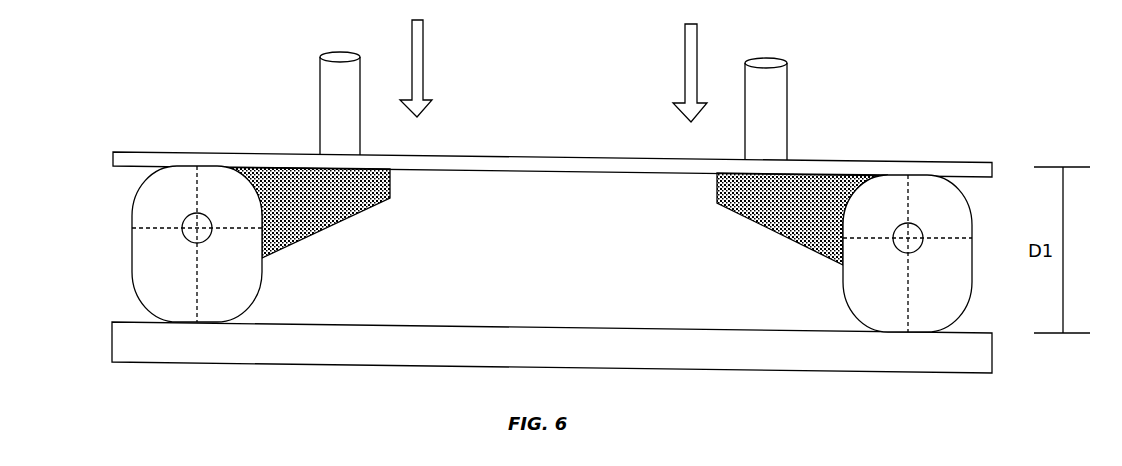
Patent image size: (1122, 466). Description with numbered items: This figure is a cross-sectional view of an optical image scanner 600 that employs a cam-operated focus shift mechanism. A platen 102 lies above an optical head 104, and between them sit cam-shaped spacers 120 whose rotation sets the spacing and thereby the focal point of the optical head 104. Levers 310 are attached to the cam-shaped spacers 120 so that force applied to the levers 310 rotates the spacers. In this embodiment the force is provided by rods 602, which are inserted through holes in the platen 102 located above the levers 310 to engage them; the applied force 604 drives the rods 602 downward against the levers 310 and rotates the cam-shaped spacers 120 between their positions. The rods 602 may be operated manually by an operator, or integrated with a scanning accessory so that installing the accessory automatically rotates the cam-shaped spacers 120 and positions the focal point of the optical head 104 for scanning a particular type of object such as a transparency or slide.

The platen 102 is at (553, 169).
The optical head 104 is at (426, 326).
The cam-shaped spacers 120 is at (275, 290).
The levers 310 is at (390, 189).
The optical image scanner 600 is at (905, 101).
The rods 602 is at (320, 85).
The applied force 604 is at (423, 58).